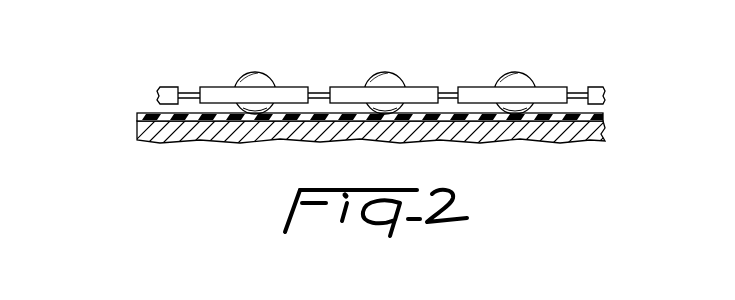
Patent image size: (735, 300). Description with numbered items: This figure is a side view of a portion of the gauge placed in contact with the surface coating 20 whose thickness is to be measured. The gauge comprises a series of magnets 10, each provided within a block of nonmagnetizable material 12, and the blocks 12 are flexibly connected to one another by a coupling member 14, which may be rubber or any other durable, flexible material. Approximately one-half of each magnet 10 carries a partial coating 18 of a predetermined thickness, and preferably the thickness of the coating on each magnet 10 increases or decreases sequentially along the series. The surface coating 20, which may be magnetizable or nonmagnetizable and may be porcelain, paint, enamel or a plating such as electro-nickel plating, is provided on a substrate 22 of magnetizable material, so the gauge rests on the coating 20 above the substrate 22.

The magnet 10 is at (540, 110).
The block of nonmagnetizable material 12 is at (433, 89).
The coupling member 14 is at (318, 92).
The partial coating 18 is at (268, 75).
The surface coating 20 is at (594, 117).
The substrate 22 is at (605, 138).